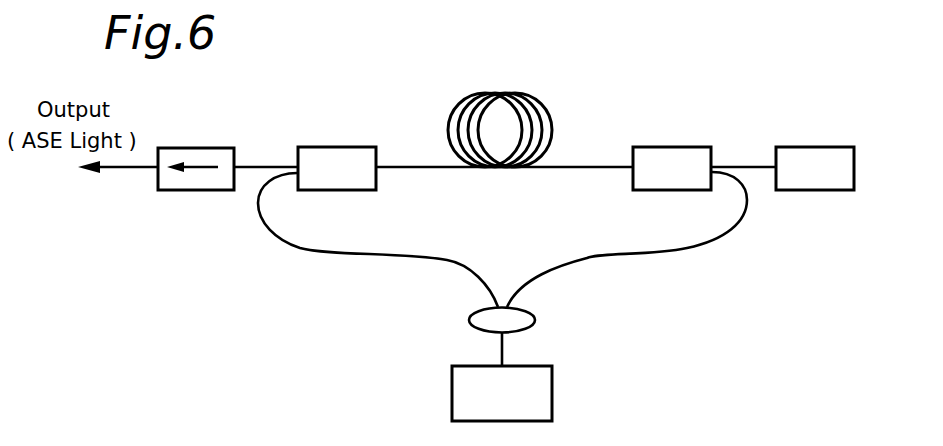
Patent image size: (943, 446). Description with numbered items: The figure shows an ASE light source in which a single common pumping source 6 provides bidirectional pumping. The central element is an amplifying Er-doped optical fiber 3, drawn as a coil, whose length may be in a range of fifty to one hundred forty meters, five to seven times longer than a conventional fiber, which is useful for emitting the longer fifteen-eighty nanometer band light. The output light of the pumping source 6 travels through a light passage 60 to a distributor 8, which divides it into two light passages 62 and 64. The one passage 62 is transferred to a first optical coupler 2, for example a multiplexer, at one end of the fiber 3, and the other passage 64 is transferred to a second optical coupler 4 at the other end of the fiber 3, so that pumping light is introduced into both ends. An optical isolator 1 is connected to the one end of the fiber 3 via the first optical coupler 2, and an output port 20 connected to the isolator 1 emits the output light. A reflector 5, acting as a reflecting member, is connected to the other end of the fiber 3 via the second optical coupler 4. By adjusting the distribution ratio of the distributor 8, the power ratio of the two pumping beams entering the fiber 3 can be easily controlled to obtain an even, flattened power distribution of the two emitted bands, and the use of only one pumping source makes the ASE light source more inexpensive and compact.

The optical isolator 1 is at (192, 147).
The first optical coupler 2 is at (335, 146).
The amplifying Er-doped optical fiber 3 is at (536, 169).
The second optical coupler 4 is at (664, 146).
The reflector 5 is at (812, 146).
The pumping source 6 is at (553, 393).
The distributor 8 is at (468, 320).
The output port 20 is at (117, 171).
The light passage 60 is at (504, 352).
The light passage 62 is at (342, 256).
The light passage 64 is at (633, 258).